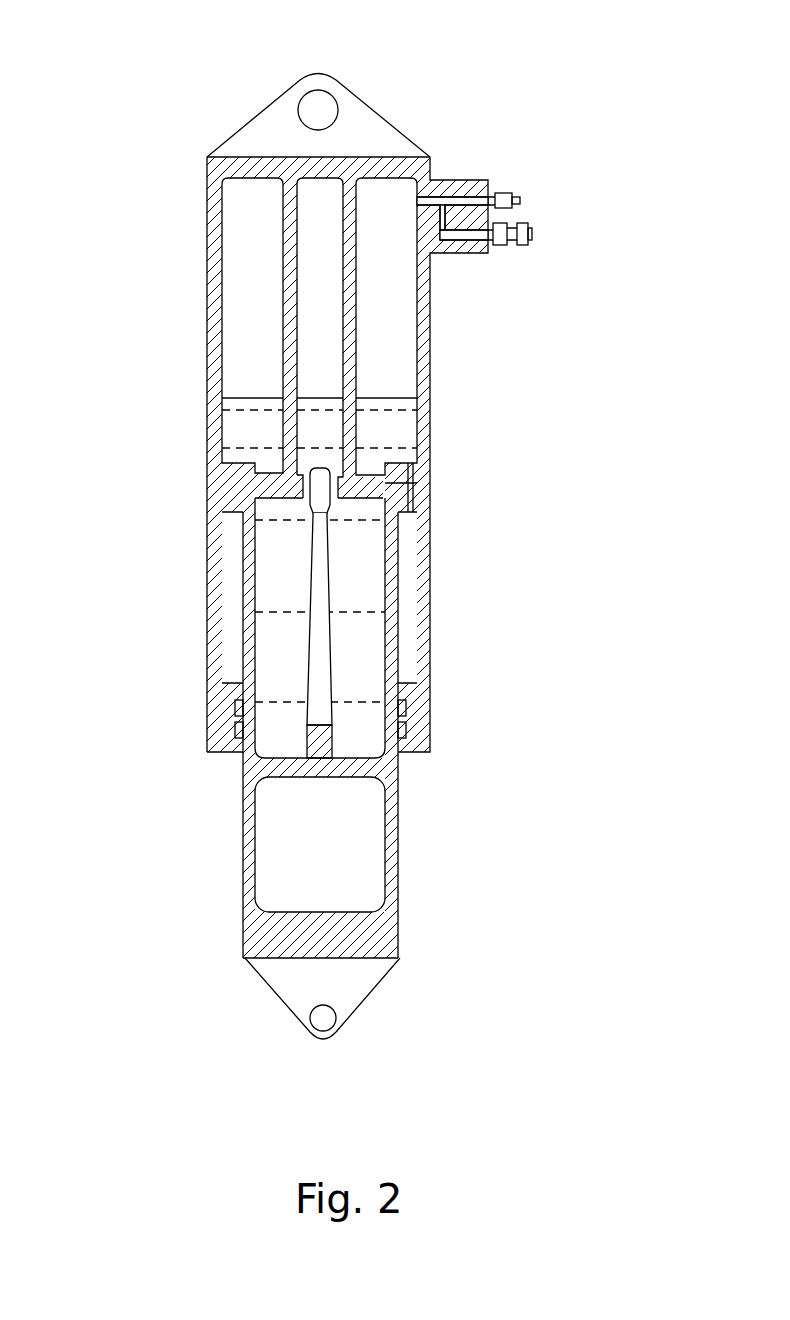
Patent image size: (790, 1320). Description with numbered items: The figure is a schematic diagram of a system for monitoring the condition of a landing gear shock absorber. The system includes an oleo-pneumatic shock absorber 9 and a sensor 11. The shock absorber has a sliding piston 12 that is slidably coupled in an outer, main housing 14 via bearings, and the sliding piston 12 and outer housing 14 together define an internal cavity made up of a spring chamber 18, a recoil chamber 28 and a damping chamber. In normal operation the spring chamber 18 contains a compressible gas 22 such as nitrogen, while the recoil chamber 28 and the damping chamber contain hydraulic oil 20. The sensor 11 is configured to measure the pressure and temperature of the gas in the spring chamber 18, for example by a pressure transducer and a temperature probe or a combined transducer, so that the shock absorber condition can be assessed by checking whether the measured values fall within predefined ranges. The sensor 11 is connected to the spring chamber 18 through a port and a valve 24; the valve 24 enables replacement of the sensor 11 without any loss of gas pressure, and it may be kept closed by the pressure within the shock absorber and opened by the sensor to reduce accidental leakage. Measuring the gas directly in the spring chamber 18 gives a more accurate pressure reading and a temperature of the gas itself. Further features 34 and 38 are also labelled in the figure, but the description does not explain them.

The oleo-pneumatic shock absorber 9 is at (177, 74).
The sensor 11 is at (528, 232).
The sliding piston 12 is at (270, 938).
The outer housing 14 is at (220, 177).
The spring chamber 18 is at (252, 337).
The hydraulic oil 20 is at (302, 567).
The compressible gas 22 is at (400, 297).
The valve 24 is at (499, 254).
The recoil chamber 28 is at (408, 577).
The upper port fitting 34 is at (504, 185).
The piston rod 38 is at (360, 667).